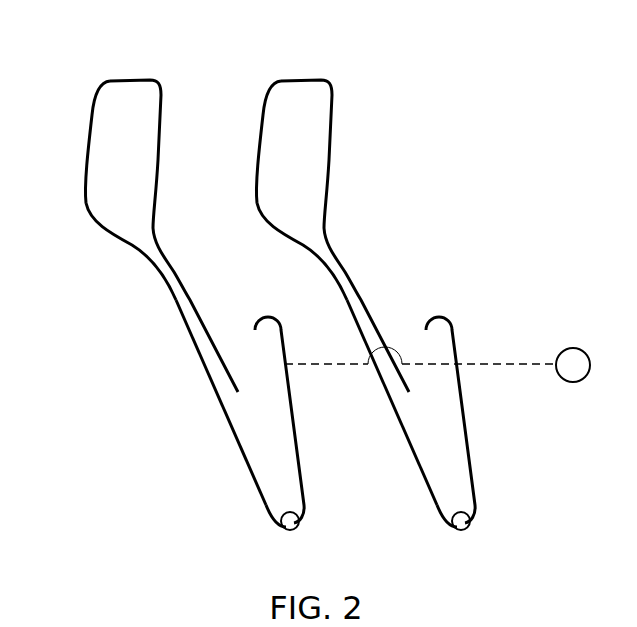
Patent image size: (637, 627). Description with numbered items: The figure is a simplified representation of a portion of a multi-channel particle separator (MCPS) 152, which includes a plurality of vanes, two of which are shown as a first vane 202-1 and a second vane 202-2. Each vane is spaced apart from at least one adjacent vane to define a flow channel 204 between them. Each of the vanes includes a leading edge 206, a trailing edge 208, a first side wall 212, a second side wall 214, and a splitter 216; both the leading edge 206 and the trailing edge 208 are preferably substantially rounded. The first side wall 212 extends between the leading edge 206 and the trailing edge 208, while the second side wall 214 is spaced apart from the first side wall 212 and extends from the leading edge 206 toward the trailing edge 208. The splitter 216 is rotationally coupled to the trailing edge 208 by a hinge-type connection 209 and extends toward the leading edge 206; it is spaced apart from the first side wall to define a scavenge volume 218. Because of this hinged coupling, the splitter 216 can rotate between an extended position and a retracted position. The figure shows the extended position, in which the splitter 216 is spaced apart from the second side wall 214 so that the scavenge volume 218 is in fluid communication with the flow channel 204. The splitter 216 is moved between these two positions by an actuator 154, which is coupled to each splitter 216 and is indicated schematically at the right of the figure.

The multi-channel particle separator 152 is at (463, 130).
The actuator 154 is at (574, 348).
The vane 202-1 is at (135, 289).
The vane 202-2 is at (414, 263).
The flow channel 204 is at (206, 77).
The leading edge 206 is at (137, 80).
The trailing edge 208 is at (288, 530).
The hinge-type connection 209 is at (280, 514).
The first side wall 212 is at (128, 243).
The second side wall 214 is at (166, 252).
The splitter 216 is at (294, 414).
The scavenge volume 218 is at (247, 445).